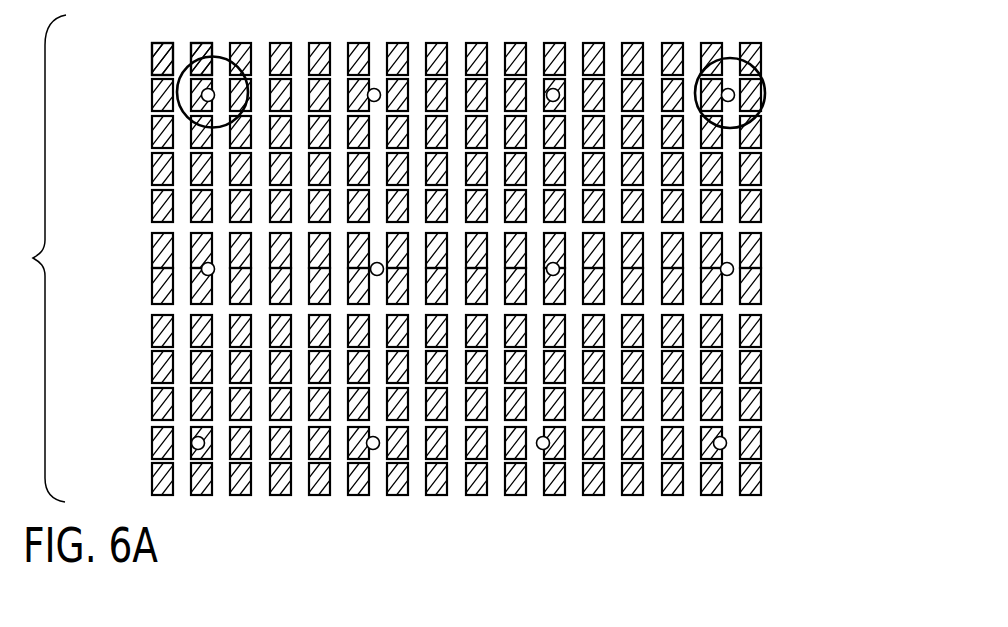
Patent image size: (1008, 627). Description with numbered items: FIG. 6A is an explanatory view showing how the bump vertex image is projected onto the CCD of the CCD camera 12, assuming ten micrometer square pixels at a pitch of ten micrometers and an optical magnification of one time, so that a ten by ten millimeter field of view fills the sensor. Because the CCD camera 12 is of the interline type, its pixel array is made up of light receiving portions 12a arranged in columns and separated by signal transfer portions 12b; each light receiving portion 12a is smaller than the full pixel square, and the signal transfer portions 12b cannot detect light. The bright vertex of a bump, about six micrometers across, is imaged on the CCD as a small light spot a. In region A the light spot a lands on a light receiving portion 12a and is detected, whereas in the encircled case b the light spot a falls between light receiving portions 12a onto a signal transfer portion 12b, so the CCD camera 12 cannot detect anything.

The CCD camera 12 is at (456, 254).
The light receiving portion 12a is at (155, 62).
The signal transfer portion 12b is at (182, 48).
The region A is at (188, 117).
The light spot a is at (210, 89).
The region b is at (765, 85).